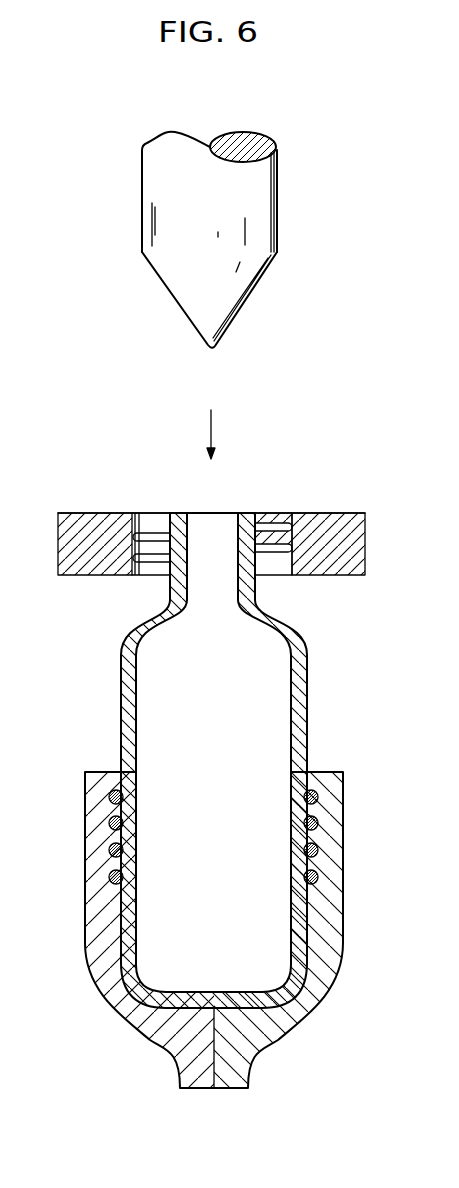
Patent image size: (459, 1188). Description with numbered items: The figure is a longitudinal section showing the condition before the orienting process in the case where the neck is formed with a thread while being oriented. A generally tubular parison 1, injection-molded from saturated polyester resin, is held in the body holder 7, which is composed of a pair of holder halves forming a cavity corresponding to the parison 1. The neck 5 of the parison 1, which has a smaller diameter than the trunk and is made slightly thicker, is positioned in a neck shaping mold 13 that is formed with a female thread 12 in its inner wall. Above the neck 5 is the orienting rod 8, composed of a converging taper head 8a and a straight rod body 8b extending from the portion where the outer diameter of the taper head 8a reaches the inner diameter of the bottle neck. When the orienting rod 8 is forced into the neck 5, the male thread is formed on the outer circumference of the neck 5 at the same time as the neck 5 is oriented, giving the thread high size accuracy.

The parison 1 is at (316, 692).
The neck 5 is at (262, 527).
The body holder 7 is at (335, 862).
The orienting rod 8 is at (130, 185).
The taper head 8a is at (194, 327).
The rod body 8b is at (268, 186).
The female thread 12 is at (157, 522).
The neck shaping mold 13 is at (331, 513).